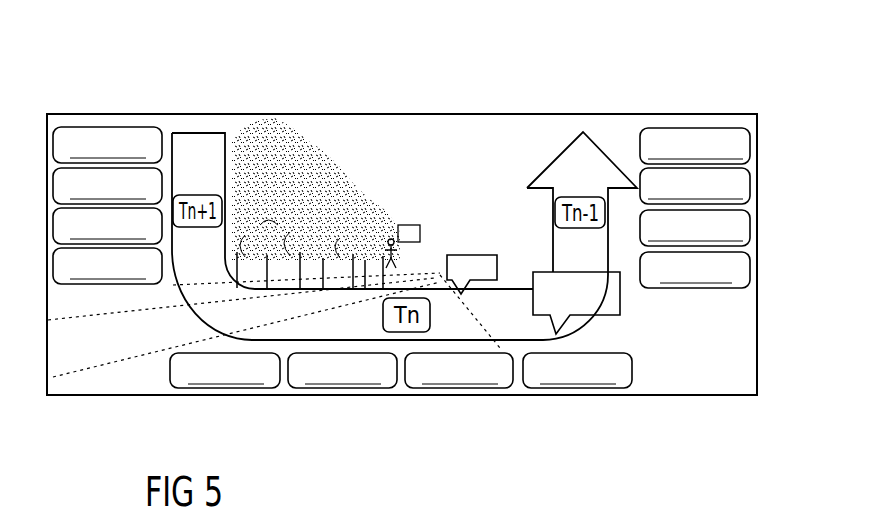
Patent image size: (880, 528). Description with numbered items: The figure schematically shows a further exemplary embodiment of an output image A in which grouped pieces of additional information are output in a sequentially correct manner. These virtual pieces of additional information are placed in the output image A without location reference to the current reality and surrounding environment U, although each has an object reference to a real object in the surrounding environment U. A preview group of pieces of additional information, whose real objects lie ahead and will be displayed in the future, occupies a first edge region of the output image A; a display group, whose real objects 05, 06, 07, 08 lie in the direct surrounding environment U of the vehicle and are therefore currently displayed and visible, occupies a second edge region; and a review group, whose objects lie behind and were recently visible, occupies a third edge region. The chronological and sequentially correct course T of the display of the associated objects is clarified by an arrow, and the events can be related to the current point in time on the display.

The real object 05 is at (417, 225).
The real object 06 is at (388, 238).
The real object 07 is at (478, 254).
The real object 08 is at (537, 270).
The course T is at (584, 131).
The output image A is at (643, 396).
The surrounding environment U is at (151, 383).